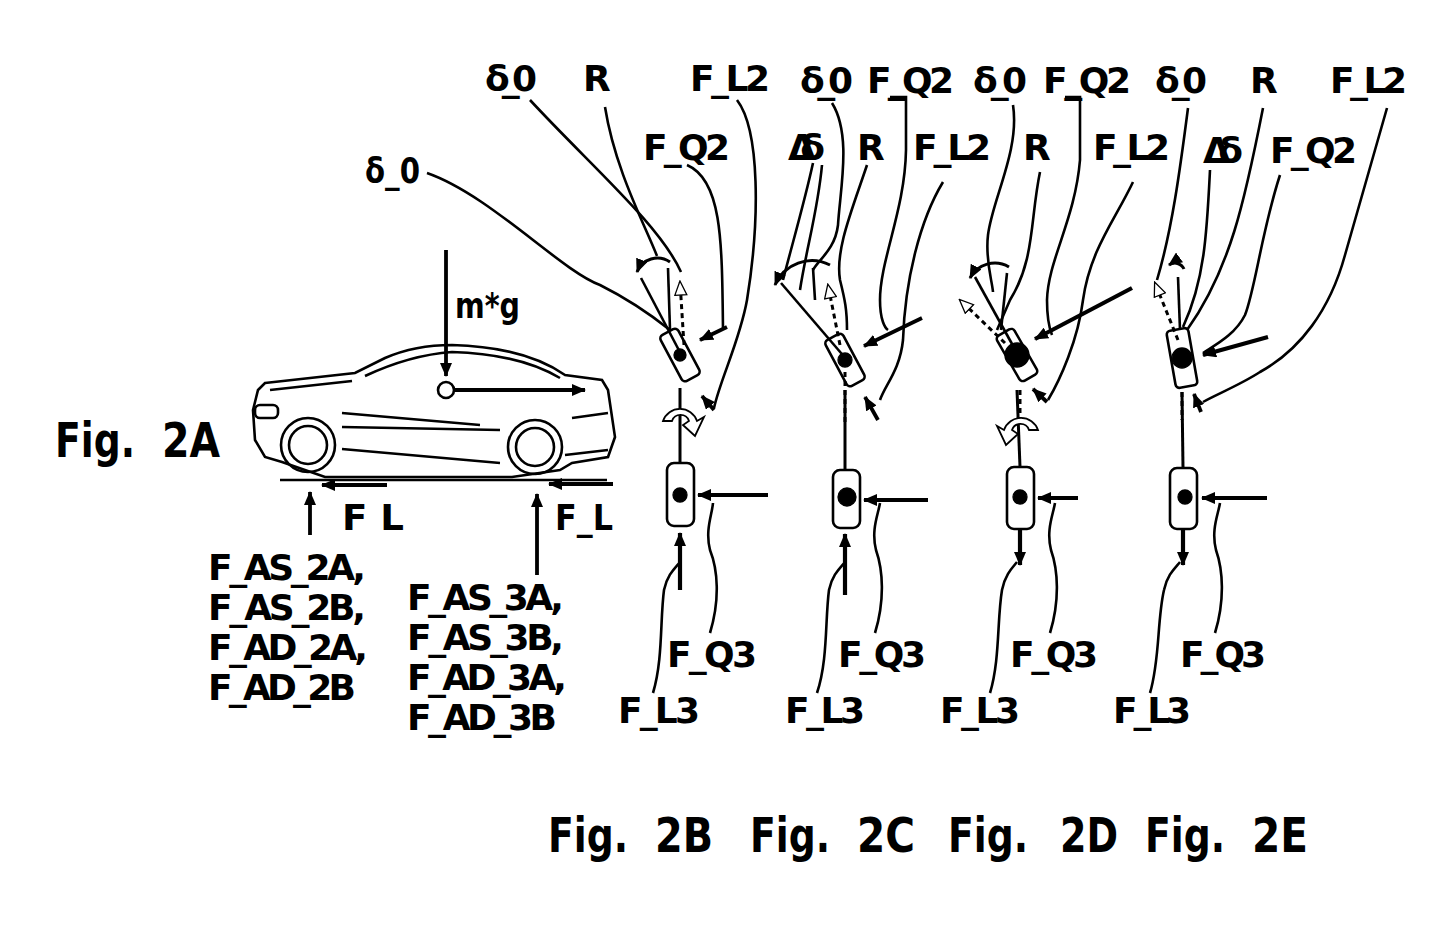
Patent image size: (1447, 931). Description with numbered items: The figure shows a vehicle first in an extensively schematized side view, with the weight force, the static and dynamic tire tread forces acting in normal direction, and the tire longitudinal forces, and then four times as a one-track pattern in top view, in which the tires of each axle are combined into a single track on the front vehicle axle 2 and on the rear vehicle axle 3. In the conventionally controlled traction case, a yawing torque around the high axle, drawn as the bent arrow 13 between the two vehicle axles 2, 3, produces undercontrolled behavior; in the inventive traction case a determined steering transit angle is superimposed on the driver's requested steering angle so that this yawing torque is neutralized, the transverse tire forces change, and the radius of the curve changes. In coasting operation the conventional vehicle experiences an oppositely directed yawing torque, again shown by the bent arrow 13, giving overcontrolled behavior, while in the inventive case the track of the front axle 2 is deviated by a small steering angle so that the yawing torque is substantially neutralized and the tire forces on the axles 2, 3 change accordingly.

In FIG. 2A, the vehicle axle 2 is at (663, 352).
In FIG. 2B, the vehicle axle 2 is at (682, 360).
In FIG. 2C, the vehicle axle 2 is at (833, 363).
In FIG. 2D, the vehicle axle 2 is at (1000, 362).
In FIG. 2E, the vehicle axle 2 is at (1167, 360).
In FIG. 2B, the vehicle axle 3 is at (667, 510).
In FIG. 2C, the vehicle axle 3 is at (833, 512).
In FIG. 2D, the vehicle axle 3 is at (1007, 512).
In FIG. 2E, the vehicle axle 3 is at (1170, 512).
In FIG. 2B, the bent arrow 13 is at (705, 438).
In FIG. 2D, the bent arrow 13 is at (1043, 437).